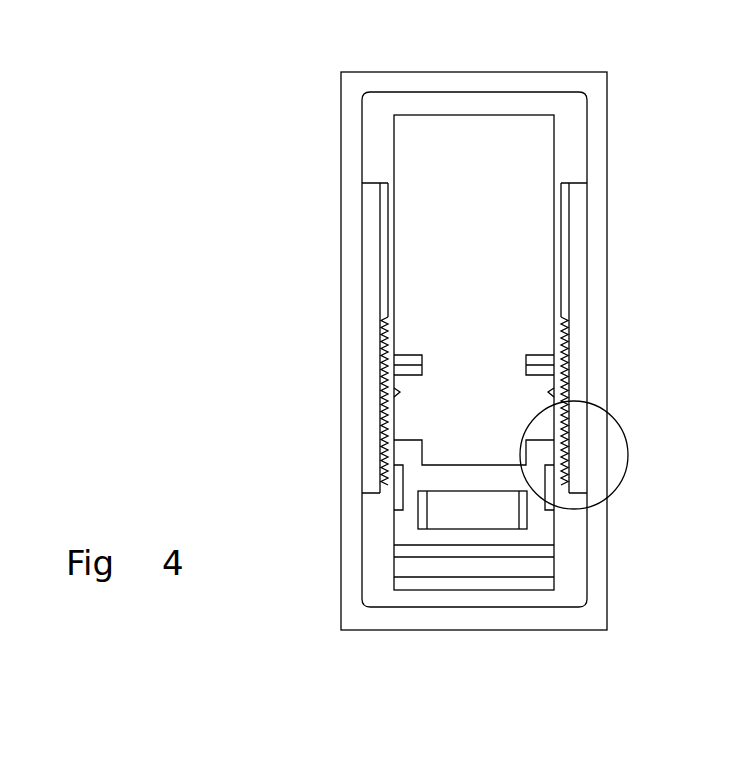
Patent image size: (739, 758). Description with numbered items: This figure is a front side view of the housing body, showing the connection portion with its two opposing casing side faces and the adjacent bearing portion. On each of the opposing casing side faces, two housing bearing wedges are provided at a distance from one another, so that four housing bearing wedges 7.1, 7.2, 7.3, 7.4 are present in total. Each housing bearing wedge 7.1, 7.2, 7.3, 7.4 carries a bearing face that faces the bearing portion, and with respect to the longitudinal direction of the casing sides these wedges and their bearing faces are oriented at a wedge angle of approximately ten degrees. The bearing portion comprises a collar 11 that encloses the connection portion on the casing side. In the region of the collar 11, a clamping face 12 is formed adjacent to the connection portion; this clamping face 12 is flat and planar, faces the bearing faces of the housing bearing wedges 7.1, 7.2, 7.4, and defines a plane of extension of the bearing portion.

The housing bearing wedge 7.1 is at (577, 145).
The housing bearing wedge 7.2 is at (575, 545).
The housing bearing wedge 7.3 is at (378, 144).
The housing bearing wedge 7.4 is at (362, 547).
The collar 11 is at (336, 368).
The clamping face 12 is at (597, 320).